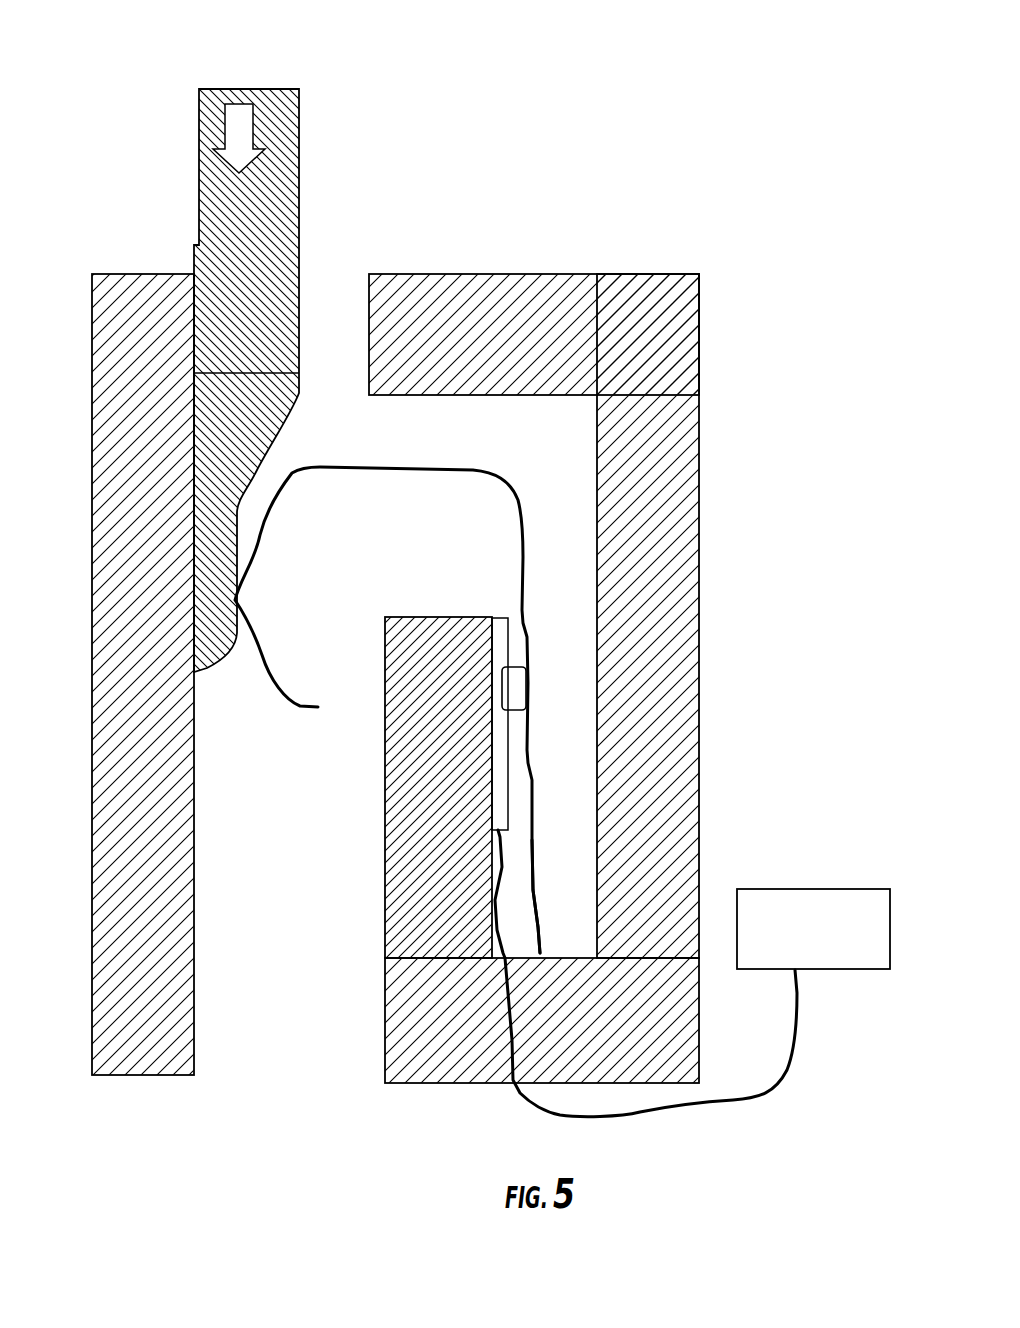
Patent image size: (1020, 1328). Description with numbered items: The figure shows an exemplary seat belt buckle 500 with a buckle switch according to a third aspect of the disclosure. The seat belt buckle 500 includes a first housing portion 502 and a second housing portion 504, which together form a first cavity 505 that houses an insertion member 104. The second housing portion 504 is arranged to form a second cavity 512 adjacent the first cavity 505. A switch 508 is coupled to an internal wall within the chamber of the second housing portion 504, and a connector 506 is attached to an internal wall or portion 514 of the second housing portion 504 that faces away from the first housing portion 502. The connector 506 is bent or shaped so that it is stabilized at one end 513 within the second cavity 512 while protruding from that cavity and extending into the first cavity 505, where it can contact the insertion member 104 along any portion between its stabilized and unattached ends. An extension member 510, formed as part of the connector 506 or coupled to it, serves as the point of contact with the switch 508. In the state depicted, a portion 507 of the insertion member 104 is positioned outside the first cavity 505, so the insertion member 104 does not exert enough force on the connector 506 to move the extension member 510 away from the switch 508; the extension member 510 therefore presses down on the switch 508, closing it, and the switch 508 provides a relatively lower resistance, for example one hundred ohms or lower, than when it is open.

The seat belt buckle 500 is at (552, 52).
The first housing portion 502 is at (121, 284).
The second housing portion 504 is at (662, 350).
The first cavity 505 is at (293, 1021).
The connector 506 is at (540, 564).
The portion of the insertion member 507 is at (303, 109).
The switch 508 is at (522, 783).
The extension member 510 is at (528, 685).
The second cavity 512 is at (575, 843).
The stabilized end 513 is at (552, 907).
The internal wall or portion 514 is at (495, 897).
The insertion member 104 is at (198, 522).